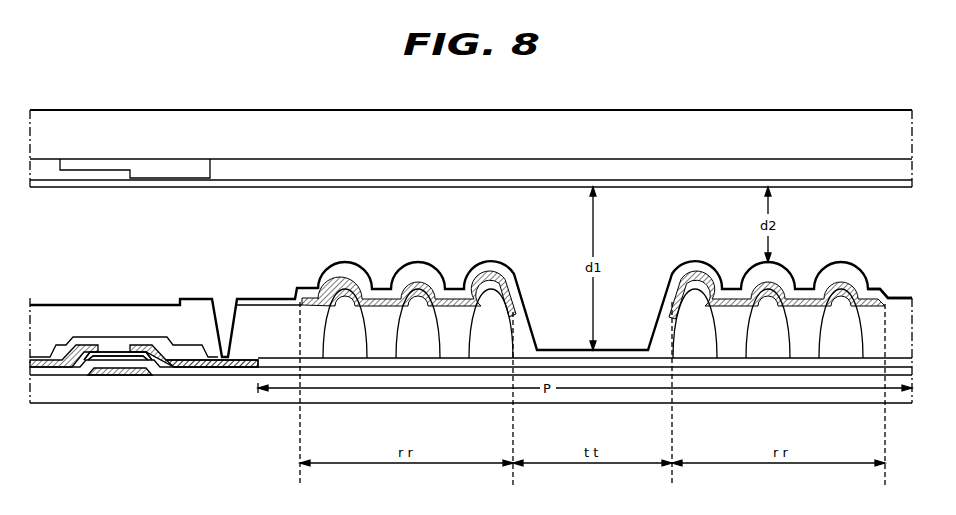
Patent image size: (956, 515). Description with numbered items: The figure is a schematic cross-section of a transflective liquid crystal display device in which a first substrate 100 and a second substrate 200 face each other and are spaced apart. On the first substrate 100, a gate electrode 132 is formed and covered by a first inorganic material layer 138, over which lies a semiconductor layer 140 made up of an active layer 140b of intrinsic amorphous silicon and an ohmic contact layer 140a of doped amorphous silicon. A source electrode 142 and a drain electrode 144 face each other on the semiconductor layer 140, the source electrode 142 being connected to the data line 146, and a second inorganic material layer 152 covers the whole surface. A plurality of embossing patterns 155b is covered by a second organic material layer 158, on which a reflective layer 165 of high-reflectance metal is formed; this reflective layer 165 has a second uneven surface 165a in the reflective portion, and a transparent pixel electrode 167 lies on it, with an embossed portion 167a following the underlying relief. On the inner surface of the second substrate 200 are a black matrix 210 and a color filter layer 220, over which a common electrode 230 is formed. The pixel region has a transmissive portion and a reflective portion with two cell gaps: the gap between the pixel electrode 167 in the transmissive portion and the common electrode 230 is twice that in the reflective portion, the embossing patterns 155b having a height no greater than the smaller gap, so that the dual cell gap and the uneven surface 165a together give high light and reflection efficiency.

The first substrate 100 is at (210, 394).
The gate electrode 132 is at (127, 376).
The first inorganic material layer 138 is at (77, 376).
The semiconductor layer 140 is at (127, 273).
The ohmic contact layer 140a is at (103, 350).
The active layer 140b is at (130, 356).
The source electrode 142 is at (85, 346).
The drain electrode 144 is at (160, 349).
The data line 146 is at (45, 357).
The second inorganic material layer 152 is at (191, 359).
The embossing patterns 155b is at (350, 345).
The second organic material layer 158 is at (283, 337).
The reflective layer 165 is at (877, 290).
The second uneven surface 165a is at (787, 272).
The pixel electrode 167 is at (267, 296).
The embossed portion of pixel electrode 167a is at (420, 262).
The second substrate 200 is at (444, 143).
The black matrix 210 is at (158, 169).
The color filter layer 220 is at (263, 170).
The common electrode 230 is at (697, 188).